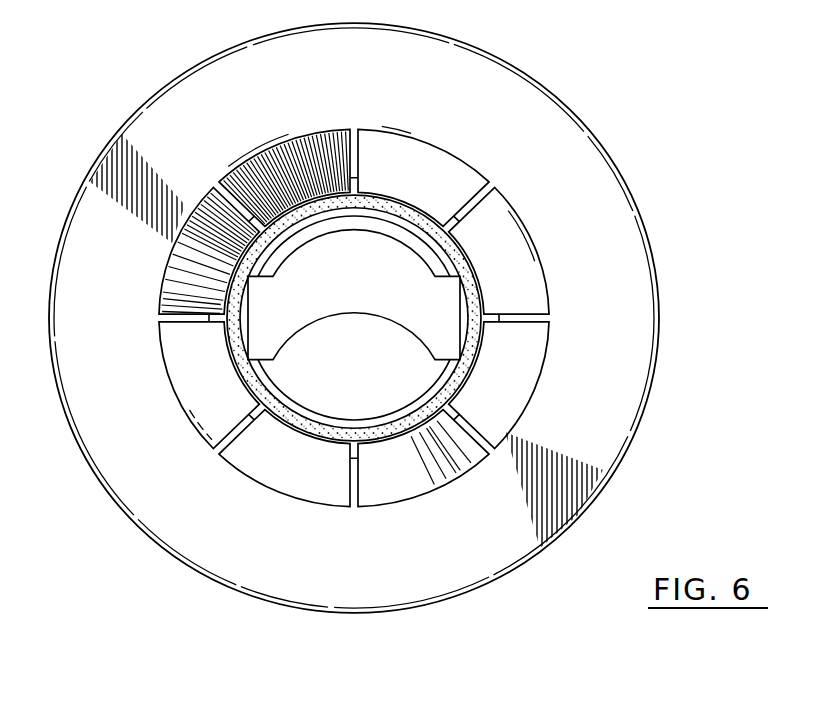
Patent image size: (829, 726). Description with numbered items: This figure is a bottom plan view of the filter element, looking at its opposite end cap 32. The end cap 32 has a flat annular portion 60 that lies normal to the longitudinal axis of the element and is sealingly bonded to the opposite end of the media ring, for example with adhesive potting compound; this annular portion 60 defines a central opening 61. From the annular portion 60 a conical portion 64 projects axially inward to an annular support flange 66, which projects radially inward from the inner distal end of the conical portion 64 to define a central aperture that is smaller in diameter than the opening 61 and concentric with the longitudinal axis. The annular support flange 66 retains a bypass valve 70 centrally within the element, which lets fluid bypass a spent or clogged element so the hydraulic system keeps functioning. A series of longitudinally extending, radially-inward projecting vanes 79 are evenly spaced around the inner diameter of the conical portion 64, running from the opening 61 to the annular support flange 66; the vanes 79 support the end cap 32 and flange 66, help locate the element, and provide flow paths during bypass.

The end cap 32 is at (660, 278).
The flat annular portion 60 is at (118, 462).
The central opening 61 is at (190, 277).
The conical portion 64 is at (510, 366).
The annular support flange 66 is at (475, 350).
The bypass valve 70 is at (438, 272).
The vanes 79 is at (355, 182).